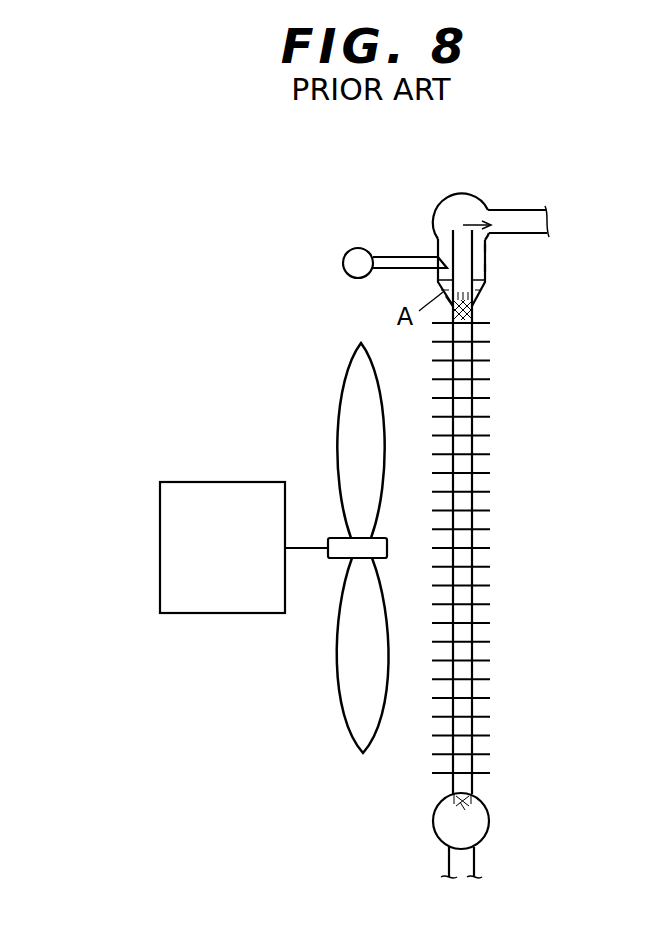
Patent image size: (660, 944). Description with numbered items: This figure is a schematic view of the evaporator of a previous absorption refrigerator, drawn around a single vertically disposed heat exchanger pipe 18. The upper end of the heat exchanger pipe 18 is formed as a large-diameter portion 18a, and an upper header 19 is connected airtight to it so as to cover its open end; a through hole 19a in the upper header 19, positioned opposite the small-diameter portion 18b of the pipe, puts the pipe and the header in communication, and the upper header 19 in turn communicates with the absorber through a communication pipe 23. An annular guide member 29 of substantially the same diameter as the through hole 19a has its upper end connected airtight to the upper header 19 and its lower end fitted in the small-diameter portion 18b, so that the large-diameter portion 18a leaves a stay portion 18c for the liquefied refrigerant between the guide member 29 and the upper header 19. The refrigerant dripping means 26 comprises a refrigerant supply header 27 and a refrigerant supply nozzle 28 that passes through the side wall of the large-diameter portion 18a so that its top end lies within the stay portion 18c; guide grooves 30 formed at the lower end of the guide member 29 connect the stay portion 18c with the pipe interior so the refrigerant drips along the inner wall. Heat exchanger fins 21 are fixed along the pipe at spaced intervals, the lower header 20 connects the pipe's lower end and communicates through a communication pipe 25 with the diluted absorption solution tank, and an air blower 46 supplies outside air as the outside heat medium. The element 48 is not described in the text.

The heat exchanger pipe 18 is at (477, 427).
The large-diameter portion 18a is at (487, 247).
The small-diameter portion 18b is at (478, 297).
The stay portion 18c is at (474, 268).
The upper header 19 is at (470, 193).
The through hole 19a is at (463, 252).
The lower header 20 is at (487, 810).
The heat exchanger fins 21 is at (479, 528).
The communication pipe 23 is at (524, 210).
The communication pipe 25 is at (475, 862).
The refrigerant dripping means 26 is at (400, 253).
The refrigerant supply header 27 is at (348, 276).
The refrigerant supply nozzle 28 is at (391, 271).
The guide member 29 is at (474, 258).
The guide grooves 30 is at (485, 283).
The air blower 46 is at (343, 720).
The reservoir bulb 48 is at (470, 823).